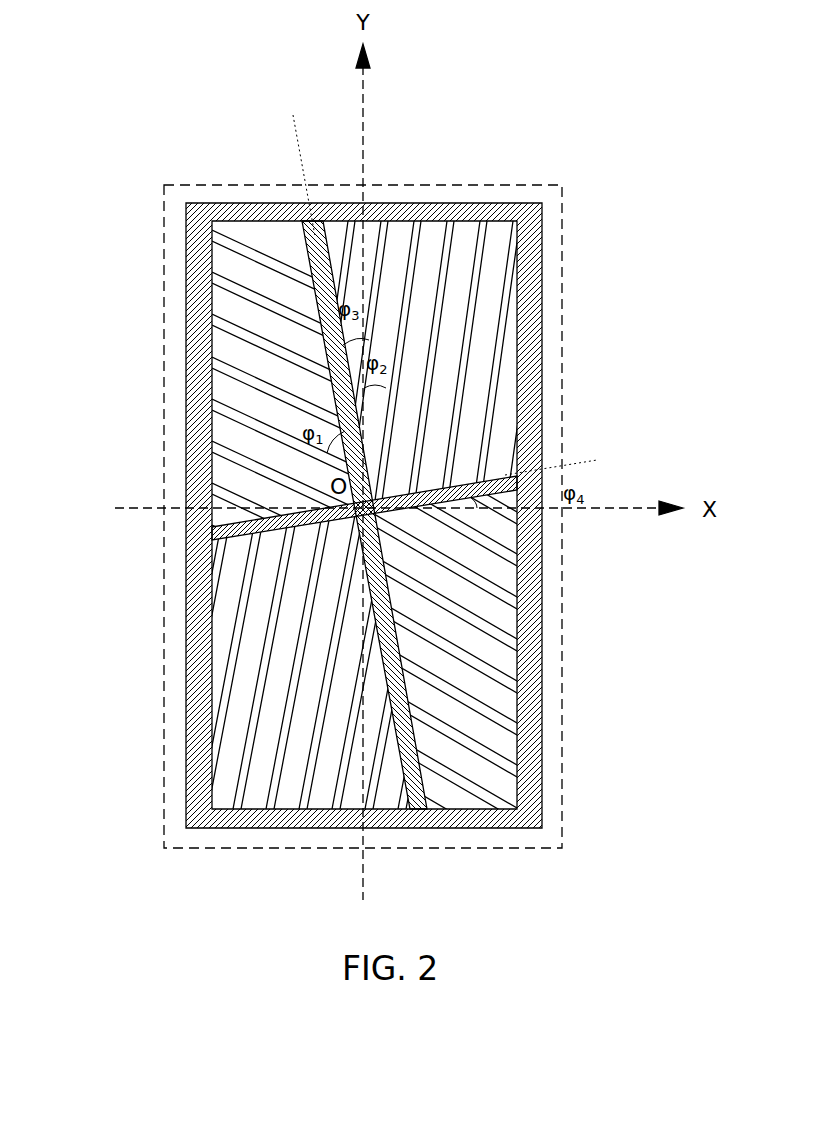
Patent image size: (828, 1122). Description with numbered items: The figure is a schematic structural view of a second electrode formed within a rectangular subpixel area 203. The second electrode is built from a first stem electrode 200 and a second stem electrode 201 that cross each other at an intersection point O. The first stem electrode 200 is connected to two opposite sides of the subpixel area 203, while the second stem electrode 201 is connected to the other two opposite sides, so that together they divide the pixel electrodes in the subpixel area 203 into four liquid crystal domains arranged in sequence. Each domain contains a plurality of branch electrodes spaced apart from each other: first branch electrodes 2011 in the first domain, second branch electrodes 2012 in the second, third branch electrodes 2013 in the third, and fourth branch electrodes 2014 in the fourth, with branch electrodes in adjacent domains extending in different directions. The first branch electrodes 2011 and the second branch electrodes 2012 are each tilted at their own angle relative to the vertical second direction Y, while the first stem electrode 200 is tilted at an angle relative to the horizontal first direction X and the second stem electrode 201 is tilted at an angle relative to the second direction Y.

The subpixel area 203 is at (468, 137).
The first stem electrode 200 is at (505, 468).
The second stem electrode 201 is at (422, 770).
The first branch electrodes 2011 is at (247, 300).
The second branch electrodes 2012 is at (442, 305).
The third branch electrodes 2013 is at (230, 652).
The fourth branch electrodes 2014 is at (497, 653).